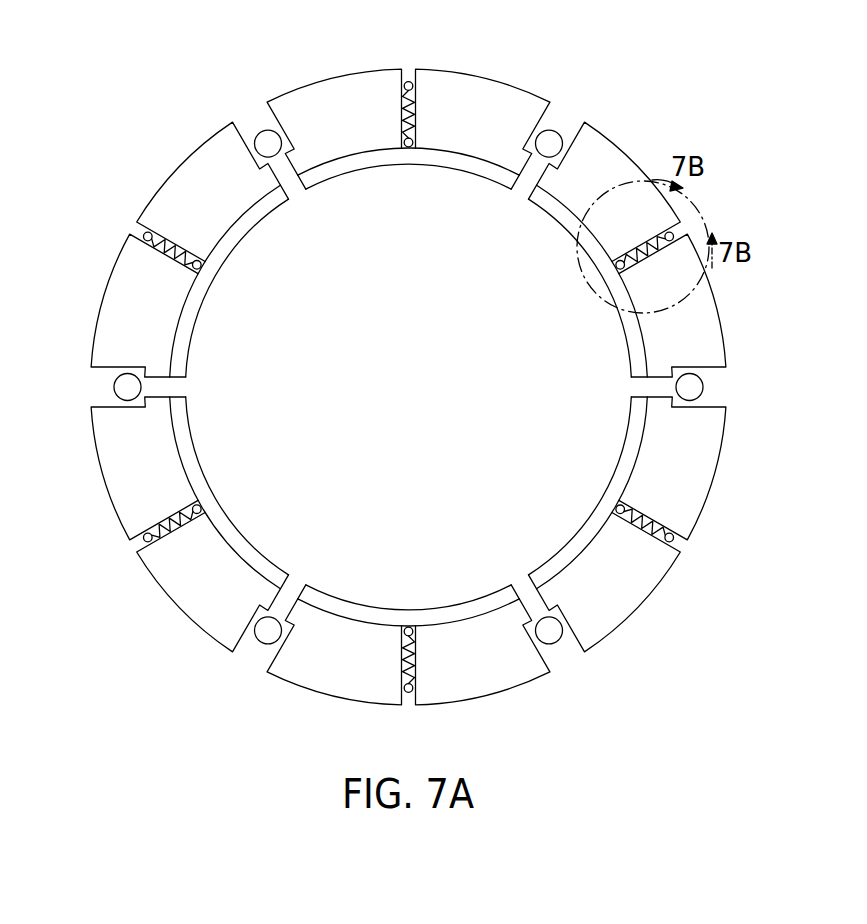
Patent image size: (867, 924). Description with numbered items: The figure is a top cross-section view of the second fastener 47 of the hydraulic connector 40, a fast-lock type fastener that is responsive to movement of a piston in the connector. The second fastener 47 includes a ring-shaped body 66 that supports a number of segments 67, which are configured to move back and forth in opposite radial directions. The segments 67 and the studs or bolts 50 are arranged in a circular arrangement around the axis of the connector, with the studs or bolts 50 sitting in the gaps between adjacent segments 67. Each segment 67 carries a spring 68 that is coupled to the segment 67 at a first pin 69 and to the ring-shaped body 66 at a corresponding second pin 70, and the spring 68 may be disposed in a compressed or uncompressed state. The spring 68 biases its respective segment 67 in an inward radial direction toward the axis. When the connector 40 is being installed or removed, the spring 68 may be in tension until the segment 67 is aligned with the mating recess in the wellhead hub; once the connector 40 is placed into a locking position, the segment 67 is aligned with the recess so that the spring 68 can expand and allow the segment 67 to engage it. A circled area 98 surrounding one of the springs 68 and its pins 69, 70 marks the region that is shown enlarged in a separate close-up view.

The connector 40 is at (404, 381).
The second fastener 47 is at (404, 389).
The studs or bolts 50 is at (256, 132).
The ring-shaped body 66 is at (404, 389).
The segment 67 is at (487, 75).
The spring 68 is at (411, 113).
The first pin 69 is at (407, 152).
The second pin 70 is at (407, 82).
The circled area 98 is at (590, 288).